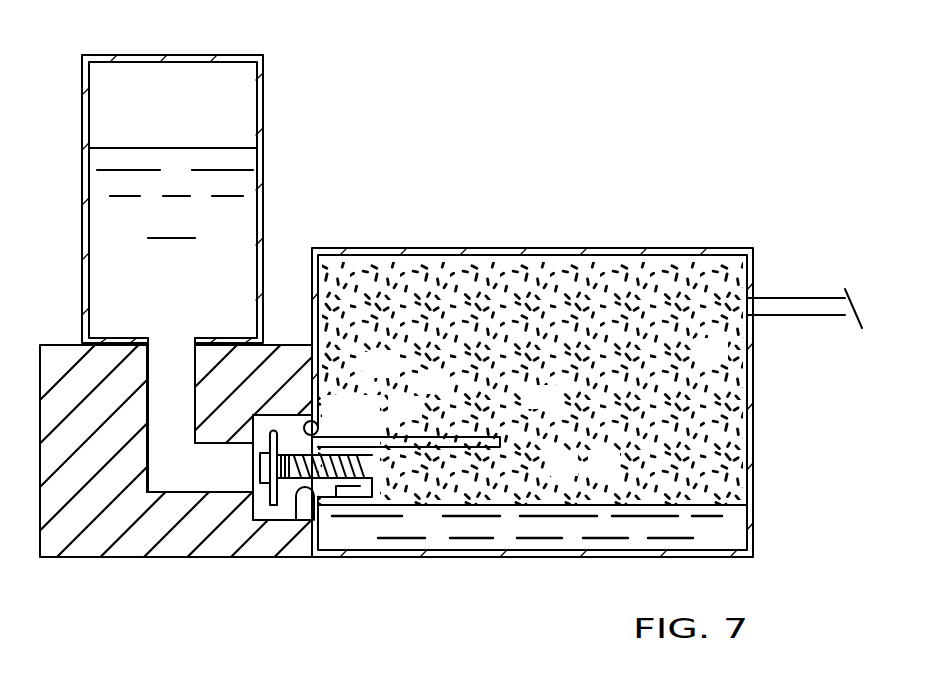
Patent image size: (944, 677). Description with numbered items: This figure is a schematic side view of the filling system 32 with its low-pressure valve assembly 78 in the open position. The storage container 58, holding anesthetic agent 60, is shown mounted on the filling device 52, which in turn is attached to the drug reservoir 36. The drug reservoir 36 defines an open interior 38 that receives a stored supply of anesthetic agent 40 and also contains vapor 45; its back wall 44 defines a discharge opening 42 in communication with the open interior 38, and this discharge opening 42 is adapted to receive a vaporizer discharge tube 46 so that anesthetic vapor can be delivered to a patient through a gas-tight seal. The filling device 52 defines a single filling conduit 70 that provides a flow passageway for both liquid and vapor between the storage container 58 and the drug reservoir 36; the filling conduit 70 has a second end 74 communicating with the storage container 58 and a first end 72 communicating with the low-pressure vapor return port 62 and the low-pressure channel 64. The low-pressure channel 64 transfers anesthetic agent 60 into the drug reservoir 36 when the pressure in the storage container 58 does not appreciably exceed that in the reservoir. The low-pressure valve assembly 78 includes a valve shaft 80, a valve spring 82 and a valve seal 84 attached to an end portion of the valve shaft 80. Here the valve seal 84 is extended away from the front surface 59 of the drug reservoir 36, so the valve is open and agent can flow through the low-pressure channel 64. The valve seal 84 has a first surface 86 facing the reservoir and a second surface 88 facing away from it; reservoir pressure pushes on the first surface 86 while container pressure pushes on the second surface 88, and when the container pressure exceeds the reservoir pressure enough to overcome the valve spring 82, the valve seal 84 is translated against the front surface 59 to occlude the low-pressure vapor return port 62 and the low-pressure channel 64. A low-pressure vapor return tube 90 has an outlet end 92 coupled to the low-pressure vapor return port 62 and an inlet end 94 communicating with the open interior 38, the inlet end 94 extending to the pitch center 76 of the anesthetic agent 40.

The filling system 32 is at (366, 155).
The drug reservoir 36 is at (512, 248).
The open interior 38 is at (582, 285).
The anesthetic agent 40 is at (580, 505).
The discharge opening 42 is at (745, 302).
The back wall 44 is at (755, 443).
The vapor 45 is at (668, 282).
The vaporizer discharge tube 46 is at (790, 297).
The filling device 52 is at (100, 535).
The storage container 58 is at (265, 118).
The front surface 59 is at (307, 355).
The anesthetic agent 60 is at (140, 158).
The low-pressure vapor return port 62 is at (316, 430).
The low-pressure channel 64 is at (298, 500).
The filling conduit 70 is at (177, 478).
The first end 72 is at (282, 502).
The second end 74 is at (177, 348).
The pitch center 76 is at (532, 504).
The low-pressure valve assembly 78 is at (323, 482).
The valve shaft 80 is at (340, 494).
The valve spring 82 is at (348, 446).
The valve seal 84 is at (287, 513).
The first surface 86 is at (275, 428).
The second surface 88 is at (272, 494).
The low-pressure vapor return tube 90 is at (427, 437).
The outlet end 92 is at (332, 440).
The inlet end 94 is at (500, 440).